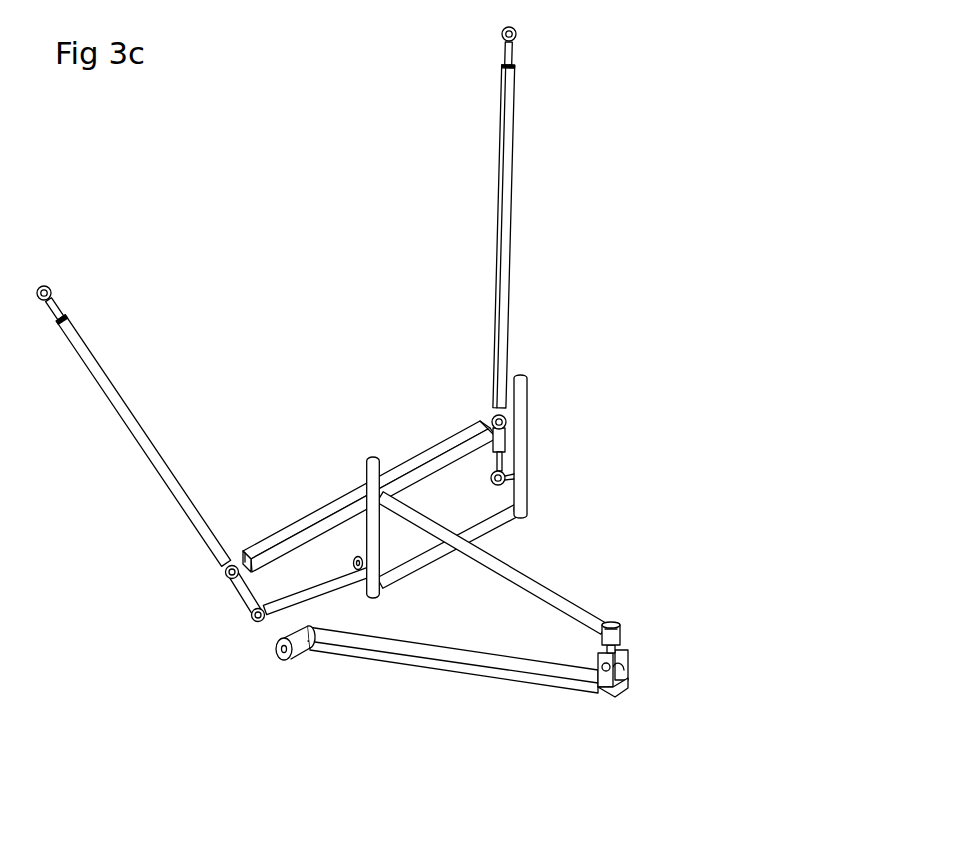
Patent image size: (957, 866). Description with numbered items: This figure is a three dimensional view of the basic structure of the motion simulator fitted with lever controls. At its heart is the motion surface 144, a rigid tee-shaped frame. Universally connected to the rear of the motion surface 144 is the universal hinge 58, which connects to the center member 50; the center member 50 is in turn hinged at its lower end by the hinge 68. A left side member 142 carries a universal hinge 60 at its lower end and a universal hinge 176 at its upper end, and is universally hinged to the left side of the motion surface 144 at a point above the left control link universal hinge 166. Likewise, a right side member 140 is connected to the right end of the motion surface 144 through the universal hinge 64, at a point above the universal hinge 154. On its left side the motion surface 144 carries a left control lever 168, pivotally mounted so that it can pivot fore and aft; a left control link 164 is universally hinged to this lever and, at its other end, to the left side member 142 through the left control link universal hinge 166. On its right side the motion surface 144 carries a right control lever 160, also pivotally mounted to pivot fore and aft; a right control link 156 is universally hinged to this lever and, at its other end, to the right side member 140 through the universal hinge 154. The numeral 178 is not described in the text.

The center member 50 is at (443, 677).
The universal hinge 58 is at (628, 646).
The universal hinge 60 is at (214, 580).
The universal hinge 64 is at (491, 419).
The hinge 68 is at (295, 663).
The right side member 140 is at (520, 216).
The left side member 142 is at (106, 431).
The motion surface 144 is at (318, 500).
The universal hinge 154 is at (489, 481).
The right control link 156 is at (510, 473).
The right control lever 160 is at (510, 532).
The left control link 164 is at (290, 607).
The left control link universal hinge 166 is at (244, 620).
The left control lever 168 is at (421, 578).
The universal hinge 176 is at (56, 285).
The eye 178 is at (524, 46).